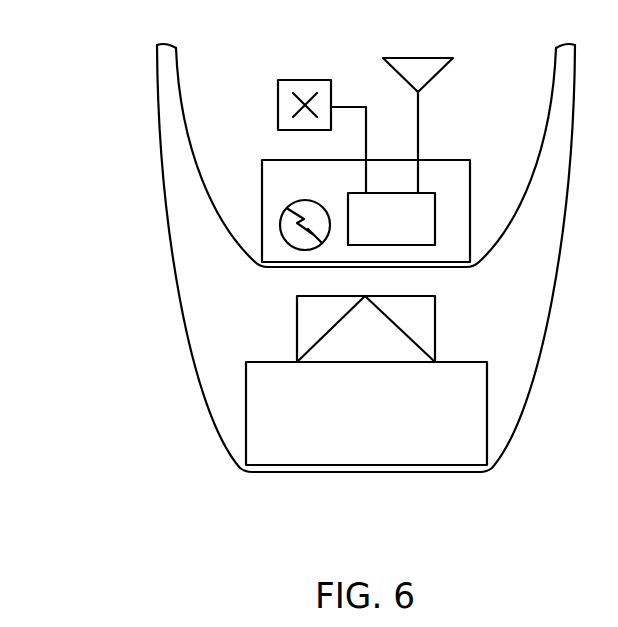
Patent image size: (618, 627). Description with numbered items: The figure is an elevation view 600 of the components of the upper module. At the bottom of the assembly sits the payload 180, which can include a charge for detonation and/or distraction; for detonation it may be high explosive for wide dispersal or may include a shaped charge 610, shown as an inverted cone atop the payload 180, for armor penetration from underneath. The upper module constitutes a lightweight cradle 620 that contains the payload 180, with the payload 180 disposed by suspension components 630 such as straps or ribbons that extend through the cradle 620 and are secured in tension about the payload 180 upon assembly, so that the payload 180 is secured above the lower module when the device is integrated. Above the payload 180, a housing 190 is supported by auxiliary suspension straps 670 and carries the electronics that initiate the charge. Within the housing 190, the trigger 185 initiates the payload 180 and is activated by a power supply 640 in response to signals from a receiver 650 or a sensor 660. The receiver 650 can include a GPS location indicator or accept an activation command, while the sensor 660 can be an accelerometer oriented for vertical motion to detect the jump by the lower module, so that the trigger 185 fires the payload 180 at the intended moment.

The elevation view 600 is at (110, 98).
The suspension components 630 is at (193, 357).
The cradle 620 is at (362, 483).
The auxiliary suspension straps 670 is at (231, 246).
The housing 190 is at (323, 190).
The trigger 185 is at (403, 231).
The power supply 640 is at (280, 223).
The receiver 650 is at (433, 75).
The sensor 660 is at (303, 80).
The shaped charge 610 is at (378, 348).
The payload 180 is at (378, 426).